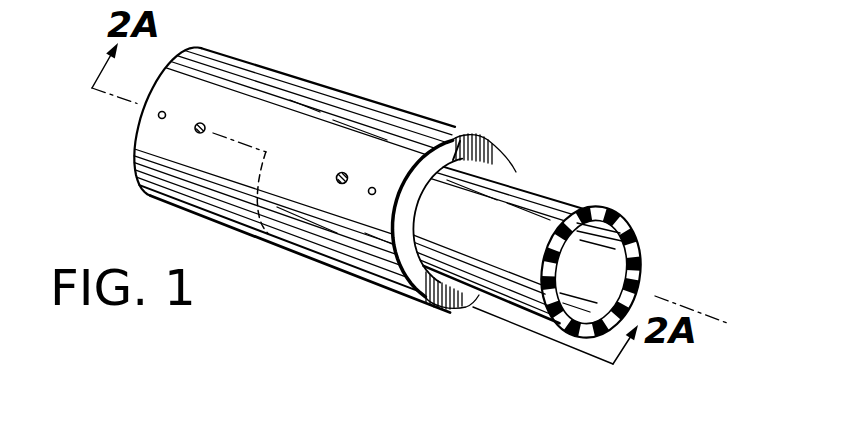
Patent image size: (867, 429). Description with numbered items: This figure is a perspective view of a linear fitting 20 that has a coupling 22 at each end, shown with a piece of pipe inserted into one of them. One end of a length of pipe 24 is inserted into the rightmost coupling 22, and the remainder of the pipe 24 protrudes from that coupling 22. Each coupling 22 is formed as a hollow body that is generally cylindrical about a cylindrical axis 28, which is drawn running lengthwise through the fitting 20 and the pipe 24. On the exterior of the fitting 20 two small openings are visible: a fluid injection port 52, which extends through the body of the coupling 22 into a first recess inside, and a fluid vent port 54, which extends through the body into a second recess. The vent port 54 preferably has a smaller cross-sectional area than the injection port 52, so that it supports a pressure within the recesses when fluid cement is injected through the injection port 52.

The fitting 20 is at (359, 94).
The coupling 22 is at (236, 61).
The pipe 24 is at (562, 200).
The cylindrical axis 28 is at (704, 312).
The fluid injection port 52 is at (198, 133).
The fluid vent port 54 is at (158, 118).